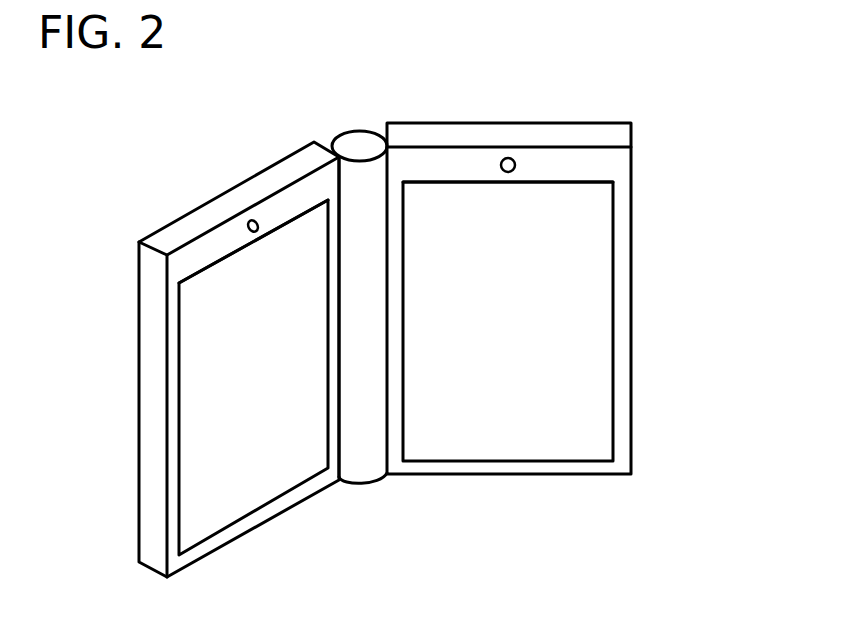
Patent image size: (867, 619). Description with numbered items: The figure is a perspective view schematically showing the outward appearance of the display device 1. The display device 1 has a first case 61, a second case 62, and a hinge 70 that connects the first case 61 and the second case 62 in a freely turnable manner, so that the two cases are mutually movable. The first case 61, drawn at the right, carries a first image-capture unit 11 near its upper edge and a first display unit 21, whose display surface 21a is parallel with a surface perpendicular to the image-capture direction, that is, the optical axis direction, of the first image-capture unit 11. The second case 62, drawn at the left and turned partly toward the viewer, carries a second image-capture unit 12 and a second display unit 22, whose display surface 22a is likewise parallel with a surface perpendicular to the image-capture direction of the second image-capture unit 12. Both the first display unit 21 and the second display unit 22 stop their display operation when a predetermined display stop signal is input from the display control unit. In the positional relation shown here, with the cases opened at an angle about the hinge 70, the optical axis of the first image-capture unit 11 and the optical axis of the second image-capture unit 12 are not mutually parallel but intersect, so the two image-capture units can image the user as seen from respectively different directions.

The display device 1 is at (378, 313).
The first image-capture unit 11 is at (511, 158).
The second image-capture unit 12 is at (252, 220).
The first display unit 21 is at (578, 279).
The display surface 21a is at (591, 207).
The second display unit 22 is at (193, 368).
The display surface 22a is at (203, 333).
The first case 61 is at (631, 390).
The second case 62 is at (138, 295).
The hinge 70 is at (358, 147).